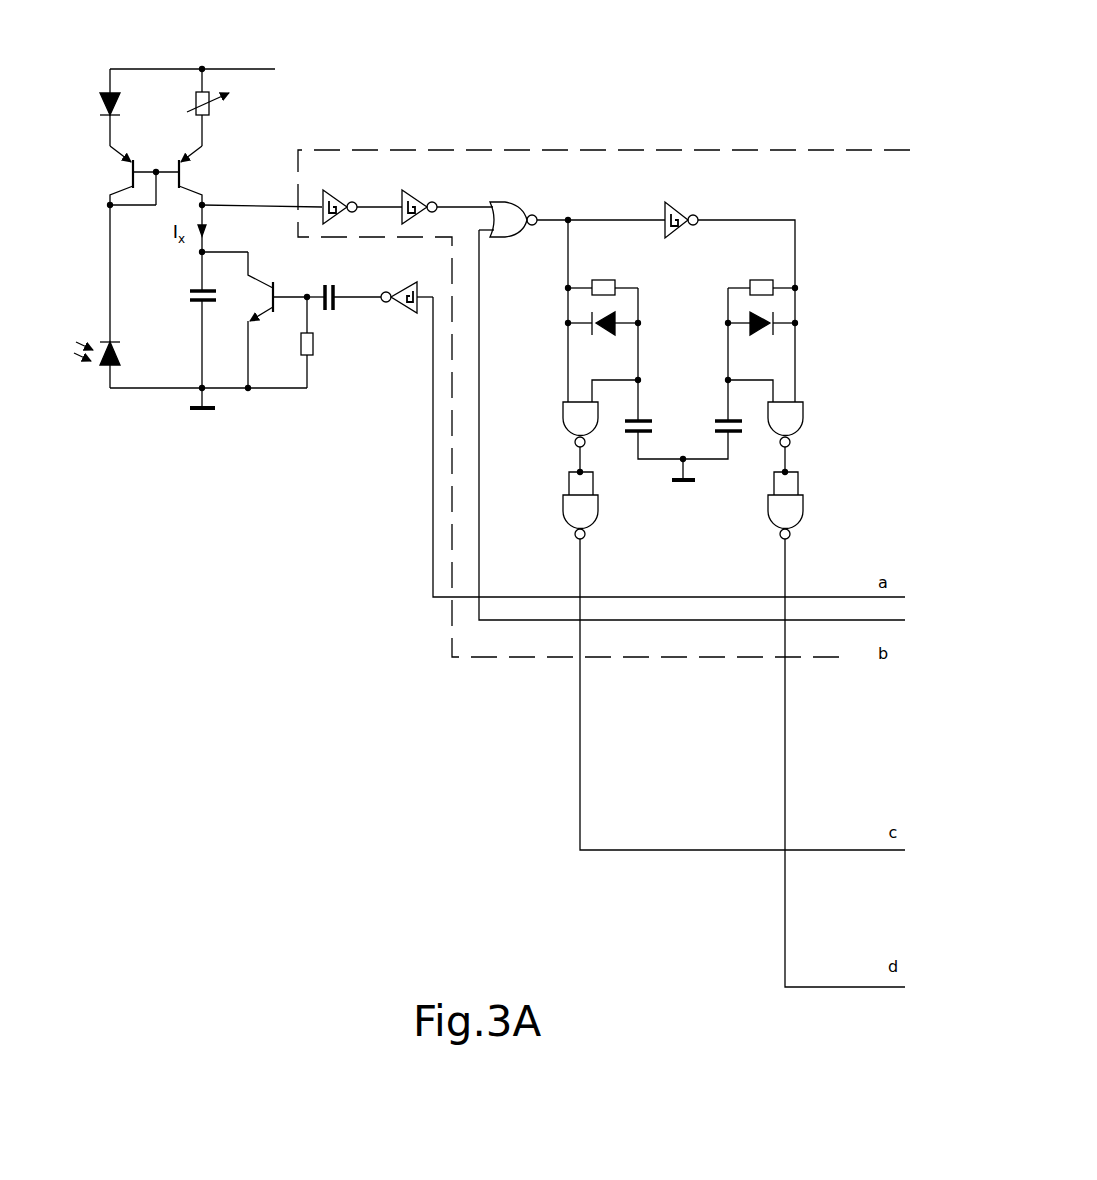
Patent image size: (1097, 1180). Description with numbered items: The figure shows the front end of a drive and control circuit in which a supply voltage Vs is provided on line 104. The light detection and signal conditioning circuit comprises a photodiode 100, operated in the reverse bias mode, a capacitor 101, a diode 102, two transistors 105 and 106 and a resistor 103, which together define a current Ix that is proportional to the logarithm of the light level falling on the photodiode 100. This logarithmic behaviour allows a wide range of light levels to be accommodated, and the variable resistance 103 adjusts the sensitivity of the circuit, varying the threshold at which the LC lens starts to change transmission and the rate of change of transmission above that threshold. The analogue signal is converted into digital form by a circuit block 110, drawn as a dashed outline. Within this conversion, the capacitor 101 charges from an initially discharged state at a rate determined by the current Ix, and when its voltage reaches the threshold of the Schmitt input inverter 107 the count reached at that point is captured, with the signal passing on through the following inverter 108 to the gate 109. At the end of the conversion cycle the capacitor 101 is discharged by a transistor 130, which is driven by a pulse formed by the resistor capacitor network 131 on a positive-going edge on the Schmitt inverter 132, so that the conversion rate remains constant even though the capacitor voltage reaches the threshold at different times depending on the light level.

The photodiode 100 is at (103, 372).
The capacitor 101 is at (193, 298).
The diode 102 is at (102, 108).
The variable resistance 103 is at (214, 106).
The line 104 is at (258, 69).
The transistor 105 is at (124, 173).
The transistor 106 is at (190, 173).
The Schmitt input inverter 107 is at (346, 192).
The Schmitt trigger inverter 108 is at (430, 176).
The NOR gate 109 is at (525, 203).
The circuit block 110 is at (508, 662).
The transistor 130 is at (258, 286).
The resistor capacitor network 131 is at (320, 292).
The Schmitt inverter 132 is at (394, 290).